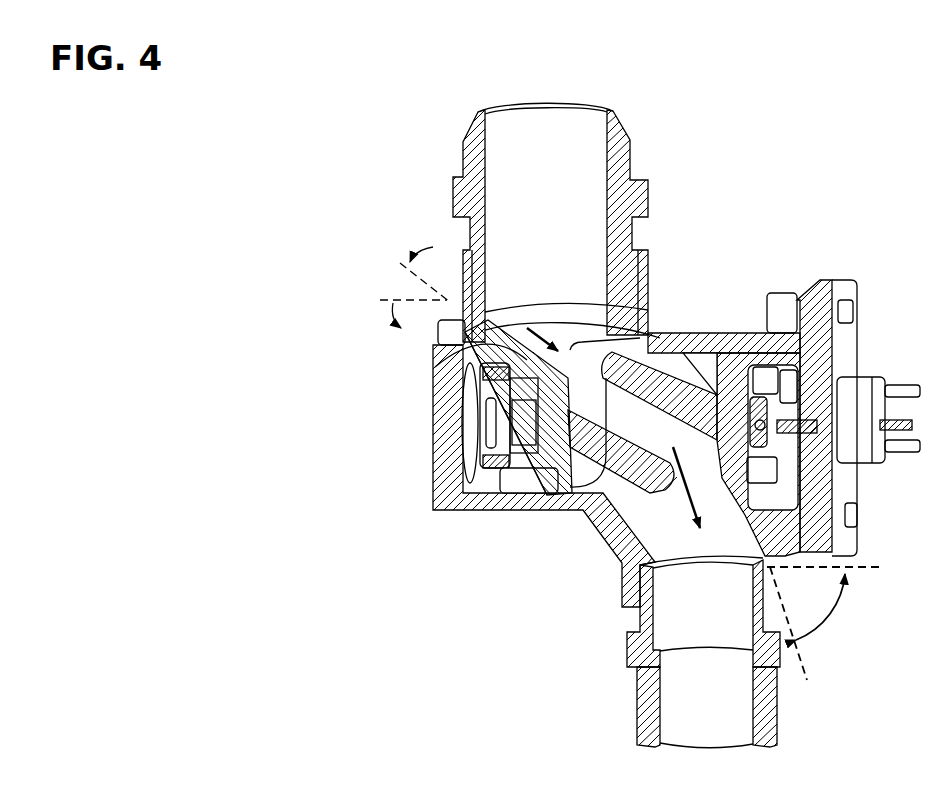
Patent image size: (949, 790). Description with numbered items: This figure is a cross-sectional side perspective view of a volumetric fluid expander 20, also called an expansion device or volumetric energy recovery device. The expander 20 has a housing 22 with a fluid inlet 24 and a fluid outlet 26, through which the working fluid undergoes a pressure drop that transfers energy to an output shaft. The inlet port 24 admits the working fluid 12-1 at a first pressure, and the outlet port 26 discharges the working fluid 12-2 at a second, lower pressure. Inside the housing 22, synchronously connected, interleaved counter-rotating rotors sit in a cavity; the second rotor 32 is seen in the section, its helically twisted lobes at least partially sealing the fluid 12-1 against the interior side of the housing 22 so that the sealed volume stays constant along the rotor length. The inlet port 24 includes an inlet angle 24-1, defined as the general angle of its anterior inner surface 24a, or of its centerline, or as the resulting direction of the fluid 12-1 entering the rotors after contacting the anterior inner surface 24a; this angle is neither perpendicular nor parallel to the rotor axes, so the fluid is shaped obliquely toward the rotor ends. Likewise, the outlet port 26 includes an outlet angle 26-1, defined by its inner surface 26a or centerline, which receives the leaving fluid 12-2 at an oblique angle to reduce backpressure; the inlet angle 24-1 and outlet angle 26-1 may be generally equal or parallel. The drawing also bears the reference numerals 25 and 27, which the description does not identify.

The volumetric fluid expander 20 is at (426, 136).
The first tubular connection portion 25 is at (615, 160).
The housing 22 is at (505, 505).
The inlet port 24 is at (477, 313).
The anterior inner surface 24a is at (465, 343).
The inlet angle 24-1 is at (407, 287).
The working fluid 12-1 is at (532, 332).
The working fluid 12-2 is at (688, 492).
The second rotor 32 is at (615, 470).
The outlet port 26 is at (640, 590).
The inner surface 26a is at (757, 527).
The outlet angle 26-1 is at (833, 612).
The hose connection end 27 is at (648, 697).